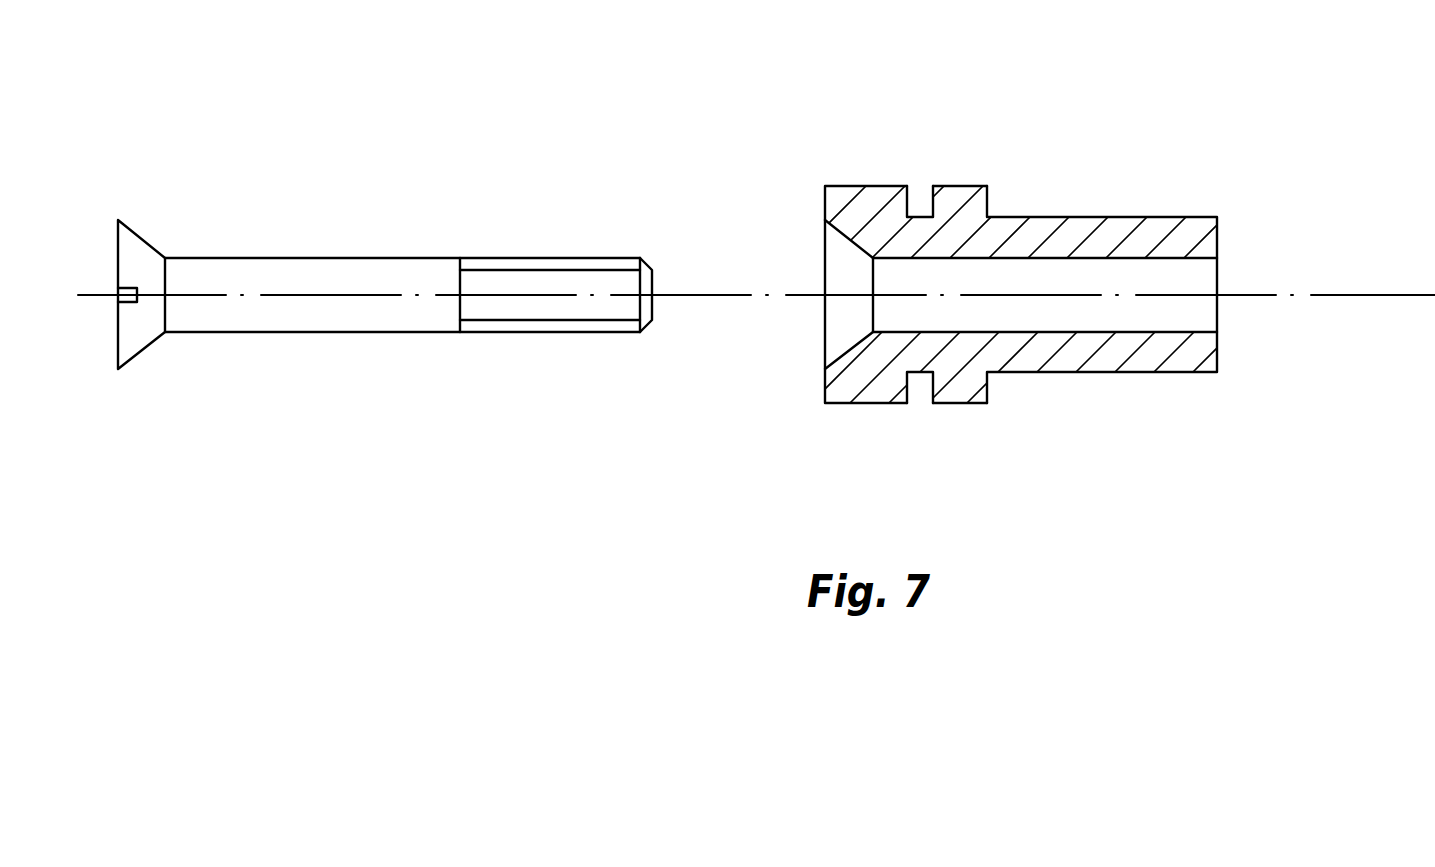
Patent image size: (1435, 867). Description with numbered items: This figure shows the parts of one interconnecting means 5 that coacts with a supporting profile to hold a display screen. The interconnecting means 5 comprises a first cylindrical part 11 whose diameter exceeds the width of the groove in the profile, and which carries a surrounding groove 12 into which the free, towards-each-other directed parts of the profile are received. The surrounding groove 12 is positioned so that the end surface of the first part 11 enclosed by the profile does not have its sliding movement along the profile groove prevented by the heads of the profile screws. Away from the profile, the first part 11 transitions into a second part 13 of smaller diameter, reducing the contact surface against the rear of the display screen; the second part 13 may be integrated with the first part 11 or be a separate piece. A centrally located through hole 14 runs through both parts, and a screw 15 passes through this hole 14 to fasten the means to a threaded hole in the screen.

The interconnecting means 5 is at (680, 467).
The first cylindrical part 11 is at (861, 211).
The surrounding groove 12 is at (907, 208).
The second part 13 is at (1082, 242).
The through hole 14 is at (1038, 331).
The screw 15 is at (273, 275).